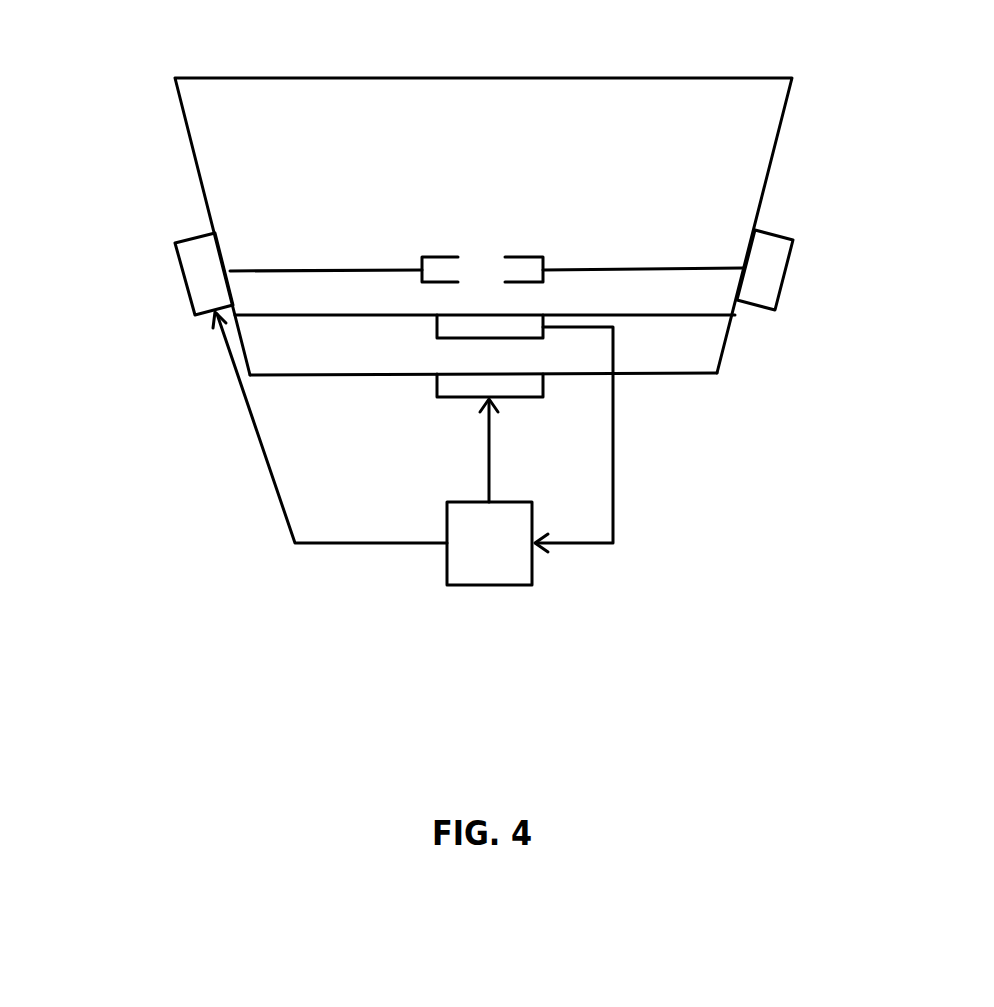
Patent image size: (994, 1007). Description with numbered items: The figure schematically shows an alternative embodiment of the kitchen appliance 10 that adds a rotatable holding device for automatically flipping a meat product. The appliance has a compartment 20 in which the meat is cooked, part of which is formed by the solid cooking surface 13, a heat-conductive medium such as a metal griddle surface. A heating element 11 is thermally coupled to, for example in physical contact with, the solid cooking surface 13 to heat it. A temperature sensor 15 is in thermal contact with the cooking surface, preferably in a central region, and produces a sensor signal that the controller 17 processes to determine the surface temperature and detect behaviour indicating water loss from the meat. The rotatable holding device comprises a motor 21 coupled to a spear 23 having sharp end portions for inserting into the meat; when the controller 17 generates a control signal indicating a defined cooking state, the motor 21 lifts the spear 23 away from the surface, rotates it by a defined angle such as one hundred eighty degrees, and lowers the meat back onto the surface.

The compartment 20 is at (612, 120).
The kitchen appliance 10 is at (758, 215).
The motor 21 is at (193, 277).
The spear 23 is at (330, 272).
The temperature sensor 15 is at (483, 325).
The solid cooking surface 13 is at (348, 352).
The heating element 11 is at (437, 397).
The controller 17 is at (490, 563).